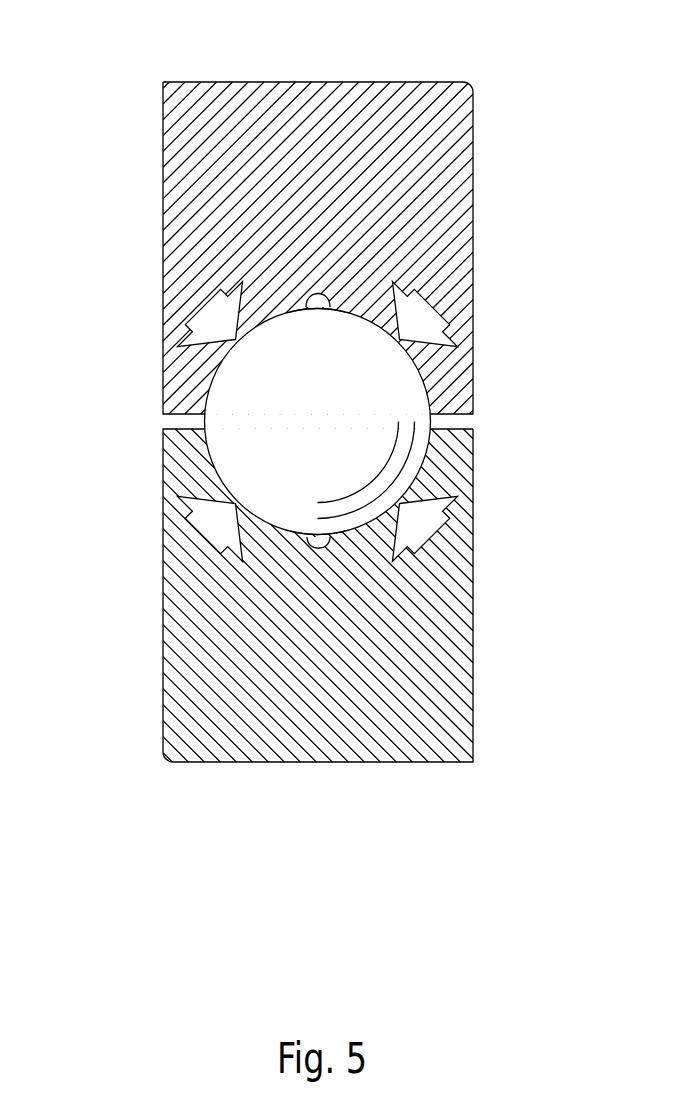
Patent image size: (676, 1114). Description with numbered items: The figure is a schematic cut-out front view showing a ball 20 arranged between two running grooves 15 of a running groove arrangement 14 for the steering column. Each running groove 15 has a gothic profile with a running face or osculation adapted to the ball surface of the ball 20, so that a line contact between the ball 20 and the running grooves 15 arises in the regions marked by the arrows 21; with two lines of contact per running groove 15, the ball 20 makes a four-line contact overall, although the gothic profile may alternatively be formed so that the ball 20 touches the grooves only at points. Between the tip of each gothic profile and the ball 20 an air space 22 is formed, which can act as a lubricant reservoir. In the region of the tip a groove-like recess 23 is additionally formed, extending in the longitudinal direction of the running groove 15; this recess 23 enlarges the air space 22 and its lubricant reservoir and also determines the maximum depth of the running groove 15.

The running groove arrangement 14 is at (486, 370).
The running groove 15 is at (336, 306).
The ball 20 is at (277, 448).
The arrows 21 is at (210, 316).
The air space 22 is at (309, 294).
The groove-like recess 23 is at (308, 546).